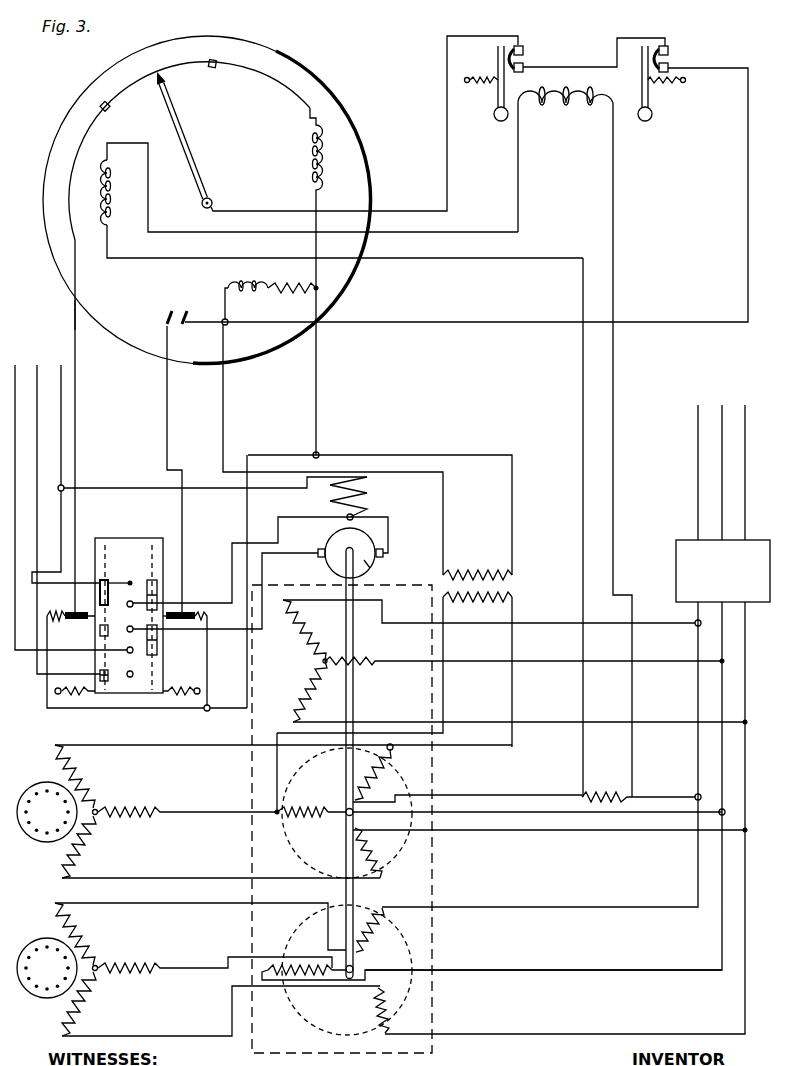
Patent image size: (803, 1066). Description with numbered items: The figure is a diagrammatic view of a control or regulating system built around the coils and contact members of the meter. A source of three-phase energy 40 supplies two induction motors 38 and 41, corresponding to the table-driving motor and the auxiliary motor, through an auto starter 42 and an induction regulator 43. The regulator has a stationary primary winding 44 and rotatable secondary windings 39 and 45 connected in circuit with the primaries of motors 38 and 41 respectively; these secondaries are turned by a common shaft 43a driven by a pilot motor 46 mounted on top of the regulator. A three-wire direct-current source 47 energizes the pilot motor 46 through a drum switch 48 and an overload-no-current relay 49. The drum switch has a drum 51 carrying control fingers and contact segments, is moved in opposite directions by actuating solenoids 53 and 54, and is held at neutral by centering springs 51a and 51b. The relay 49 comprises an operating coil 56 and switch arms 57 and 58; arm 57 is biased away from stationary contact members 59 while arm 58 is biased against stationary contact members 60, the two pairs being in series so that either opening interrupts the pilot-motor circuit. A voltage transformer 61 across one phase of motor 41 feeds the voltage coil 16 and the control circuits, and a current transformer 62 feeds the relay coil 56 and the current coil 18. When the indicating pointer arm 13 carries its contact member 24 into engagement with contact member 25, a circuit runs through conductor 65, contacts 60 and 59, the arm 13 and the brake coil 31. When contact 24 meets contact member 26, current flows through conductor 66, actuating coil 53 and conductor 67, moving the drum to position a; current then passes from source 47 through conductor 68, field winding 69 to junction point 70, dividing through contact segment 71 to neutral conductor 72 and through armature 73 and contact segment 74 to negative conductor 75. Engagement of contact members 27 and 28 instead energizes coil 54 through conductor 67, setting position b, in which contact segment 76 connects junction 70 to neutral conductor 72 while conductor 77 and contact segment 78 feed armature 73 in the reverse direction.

The indicating pointer arm 13 is at (222, 161).
The voltage coil 16 is at (248, 283).
The current coil 18 is at (100, 190).
The contact member 24 is at (163, 78).
The contact member 25 is at (213, 60).
The contact member 26 is at (112, 96).
The contact member 27 is at (170, 309).
The contact member 28 is at (185, 310).
The brake coil 31 is at (326, 170).
The induction motor 38 is at (58, 922).
The rotatable secondary winding 39 is at (318, 964).
The source of three-phase energy 40 is at (730, 397).
The induction motor 41 is at (66, 877).
The auto starter 42 is at (734, 584).
The induction regulator 43 is at (412, 585).
The common shaft 43a is at (355, 709).
The stationary primary winding 44 is at (302, 690).
The rotatable secondary winding 45 is at (324, 818).
The pilot motor 46 is at (320, 543).
The direct-current source 47 is at (47, 360).
The drum switch 48 is at (144, 535).
The overload-no-current relay 49 is at (590, 43).
The drum 51 is at (108, 540).
The centering spring 51a is at (75, 697).
The centering spring 51b is at (180, 697).
The actuating solenoid 53 is at (62, 606).
The actuating solenoid 54 is at (184, 610).
The operating coil 56 is at (588, 100).
The movable switch arm 57 is at (497, 93).
The movable switch arm 58 is at (660, 97).
The stationary contact members 59 is at (524, 47).
The stationary contact members 60 is at (666, 47).
The voltage transformer 61 is at (538, 596).
The current transformer 62 is at (630, 797).
The conductor 65 is at (437, 325).
The conductor 66 is at (75, 322).
The conductor 67 is at (250, 676).
The conductor 68 is at (142, 486).
The field winding 69 is at (368, 486).
The junction point 70 is at (356, 515).
The contact segment 71 is at (136, 578).
The neutral conductor 72 is at (45, 515).
The armature 73 is at (372, 572).
The contact segment 74 is at (157, 649).
The negative conductor 75 is at (15, 555).
The contact segment 76 is at (121, 600).
The conductor 77 is at (58, 496).
The contact segment 78 is at (108, 682).